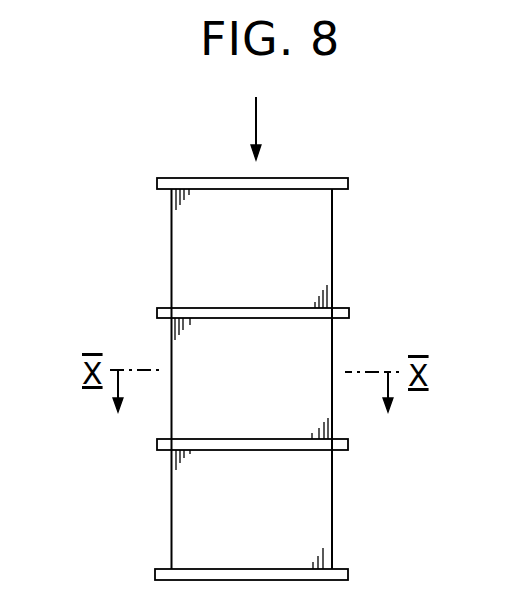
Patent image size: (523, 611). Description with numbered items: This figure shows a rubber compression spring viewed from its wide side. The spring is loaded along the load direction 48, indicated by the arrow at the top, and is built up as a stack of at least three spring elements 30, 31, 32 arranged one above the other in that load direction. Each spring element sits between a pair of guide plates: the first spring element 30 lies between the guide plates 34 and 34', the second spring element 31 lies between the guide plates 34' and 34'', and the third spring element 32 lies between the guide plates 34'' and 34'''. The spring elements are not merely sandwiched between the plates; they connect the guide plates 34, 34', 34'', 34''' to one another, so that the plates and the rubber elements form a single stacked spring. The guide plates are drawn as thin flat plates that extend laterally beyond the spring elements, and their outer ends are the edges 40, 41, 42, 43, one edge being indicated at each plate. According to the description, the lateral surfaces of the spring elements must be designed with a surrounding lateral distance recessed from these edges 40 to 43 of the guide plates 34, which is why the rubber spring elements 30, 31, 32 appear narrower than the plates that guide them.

The spring element 30 is at (265, 270).
The spring element 31 is at (265, 386).
The spring element 32 is at (265, 537).
The guide plate 34 is at (198, 185).
The guide plate 34' is at (189, 312).
The guide plate 34'' is at (194, 445).
The guide plate 34''' is at (191, 566).
The edge of guide plate 40 is at (343, 189).
The edge of guide plate 41 is at (343, 318).
The edge of guide plate 42 is at (343, 450).
The edge of guide plate 43 is at (344, 569).
The load direction 48 is at (258, 122).